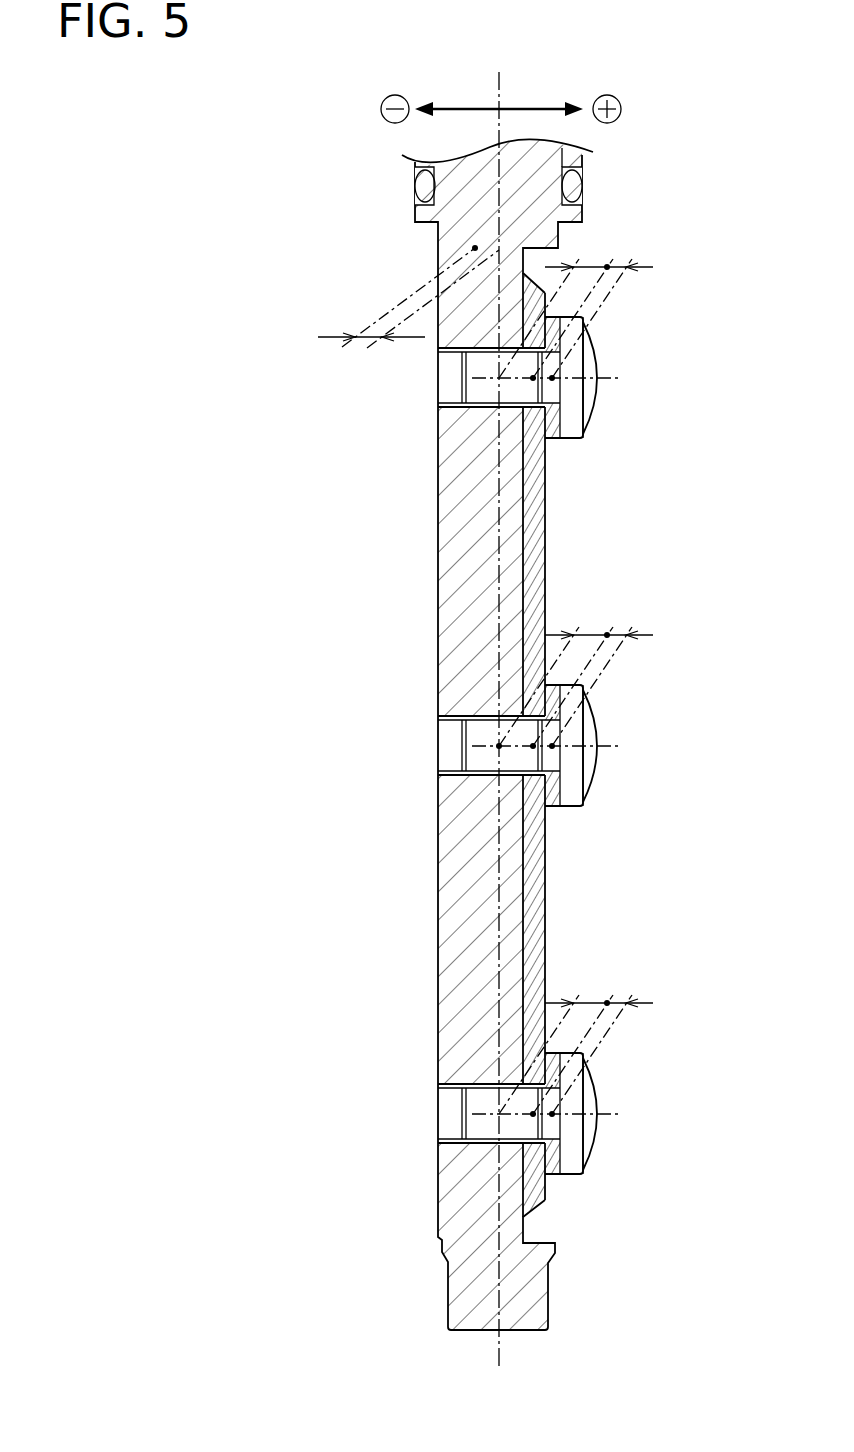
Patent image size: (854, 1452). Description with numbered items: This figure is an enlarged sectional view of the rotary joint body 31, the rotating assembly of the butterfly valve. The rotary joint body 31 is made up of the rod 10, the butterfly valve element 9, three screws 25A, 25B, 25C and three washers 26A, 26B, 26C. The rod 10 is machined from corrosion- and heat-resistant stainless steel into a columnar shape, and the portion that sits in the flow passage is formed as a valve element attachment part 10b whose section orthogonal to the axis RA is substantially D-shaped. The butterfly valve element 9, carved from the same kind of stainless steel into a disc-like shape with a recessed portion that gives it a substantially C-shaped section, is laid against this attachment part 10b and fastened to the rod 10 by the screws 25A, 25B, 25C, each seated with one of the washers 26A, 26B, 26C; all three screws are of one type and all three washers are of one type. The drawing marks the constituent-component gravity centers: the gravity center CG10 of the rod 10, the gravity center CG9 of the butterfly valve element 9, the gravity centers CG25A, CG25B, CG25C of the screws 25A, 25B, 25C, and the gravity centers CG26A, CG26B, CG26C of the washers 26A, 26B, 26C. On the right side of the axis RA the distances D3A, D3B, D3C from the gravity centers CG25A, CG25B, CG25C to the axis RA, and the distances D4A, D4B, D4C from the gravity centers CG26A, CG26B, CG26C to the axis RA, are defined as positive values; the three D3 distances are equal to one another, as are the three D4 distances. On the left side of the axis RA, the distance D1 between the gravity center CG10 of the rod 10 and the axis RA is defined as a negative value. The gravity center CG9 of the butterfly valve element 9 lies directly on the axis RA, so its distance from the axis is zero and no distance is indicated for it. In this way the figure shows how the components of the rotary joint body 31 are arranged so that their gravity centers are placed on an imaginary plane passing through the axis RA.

The rod 10 is at (463, 460).
The valve element attachment part 10b is at (523, 587).
The butterfly valve element 9 is at (541, 490).
The rotary joint body 31 is at (284, 159).
The axis RA is at (500, 93).
The gravity center CG10 is at (475, 248).
The distance D1 is at (405, 298).
The screw 25A is at (577, 360).
The screw 25B is at (577, 728).
The screw 25C is at (577, 1096).
The washer 26A is at (562, 307).
The washer 26B is at (562, 675).
The washer 26C is at (562, 1043).
The gravity center CG25A is at (533, 378).
The gravity center CG25B is at (533, 746).
The gravity center CG25C is at (533, 1114).
The gravity center CG26A is at (552, 378).
The gravity center CG26B is at (552, 746).
The gravity center CG26C is at (552, 1114).
The gravity center CG9 is at (499, 746).
The distance D3A is at (585, 267).
The distance D3B is at (585, 635).
The distance D3C is at (585, 1003).
The distance D4A is at (618, 267).
The distance D4B is at (618, 635).
The distance D4C is at (618, 1003).